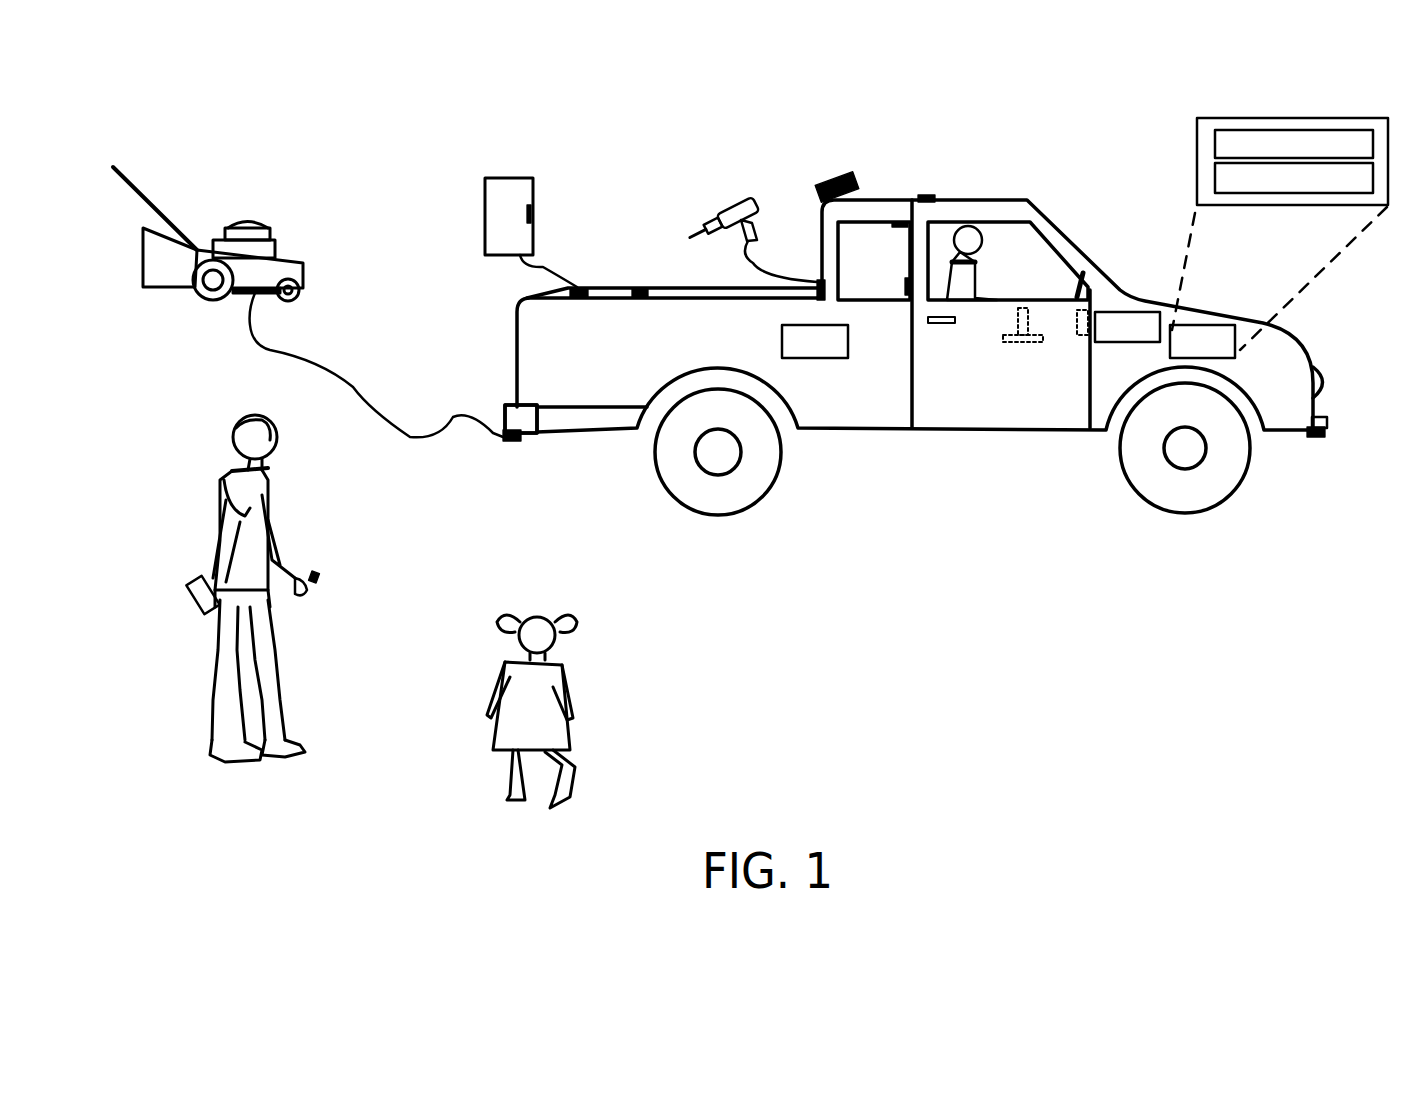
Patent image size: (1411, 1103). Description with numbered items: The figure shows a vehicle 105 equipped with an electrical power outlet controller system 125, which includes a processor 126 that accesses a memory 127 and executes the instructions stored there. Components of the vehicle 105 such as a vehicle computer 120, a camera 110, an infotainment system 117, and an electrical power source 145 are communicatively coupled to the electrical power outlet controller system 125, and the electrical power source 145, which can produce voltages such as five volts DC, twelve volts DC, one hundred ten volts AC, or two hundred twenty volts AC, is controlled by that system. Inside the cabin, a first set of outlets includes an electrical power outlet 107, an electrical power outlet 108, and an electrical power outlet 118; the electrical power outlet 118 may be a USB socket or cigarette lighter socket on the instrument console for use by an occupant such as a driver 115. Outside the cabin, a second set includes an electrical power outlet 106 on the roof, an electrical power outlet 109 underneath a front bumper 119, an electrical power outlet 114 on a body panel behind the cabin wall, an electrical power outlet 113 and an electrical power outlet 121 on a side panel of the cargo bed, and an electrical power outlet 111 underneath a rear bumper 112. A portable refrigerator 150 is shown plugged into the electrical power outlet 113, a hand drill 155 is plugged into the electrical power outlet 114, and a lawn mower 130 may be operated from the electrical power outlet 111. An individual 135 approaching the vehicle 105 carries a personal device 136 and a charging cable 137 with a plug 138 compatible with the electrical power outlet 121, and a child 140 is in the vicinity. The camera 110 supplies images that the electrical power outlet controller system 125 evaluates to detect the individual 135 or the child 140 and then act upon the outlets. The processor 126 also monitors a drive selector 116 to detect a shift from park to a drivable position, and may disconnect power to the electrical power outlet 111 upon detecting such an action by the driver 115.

The vehicle 105 is at (702, 140).
The electrical power outlet 106 is at (925, 197).
The electrical power outlet 107 is at (898, 227).
The electrical power outlet 108 is at (905, 288).
The electrical power outlet 109 is at (1318, 437).
The camera 110 is at (838, 173).
The electrical power outlet 111 is at (505, 442).
The rear bumper 112 is at (503, 417).
The electrical power outlet 113 is at (577, 287).
The electrical power outlet 114 is at (817, 278).
The driver 115 is at (980, 275).
The drive selector 116 is at (997, 342).
The infotainment system 117 is at (1088, 277).
The electrical power outlet 118 is at (1079, 337).
The front bumper 119 is at (1328, 422).
The vehicle computer 120 is at (1127, 327).
The electrical power outlet 121 is at (642, 287).
The electrical power outlet controller system 125 is at (1279, 238).
The processor 126 is at (1294, 144).
The memory 127 is at (1294, 178).
The lawn mower 130 is at (285, 225).
The individual 135 is at (205, 462).
The personal device 136 is at (202, 615).
The charging cable 137 is at (302, 593).
The plug 138 is at (320, 578).
The child 140 is at (598, 652).
The electrical power source 145 is at (815, 341).
The portable refrigerator 150 is at (473, 168).
The hand drill 155 is at (737, 203).